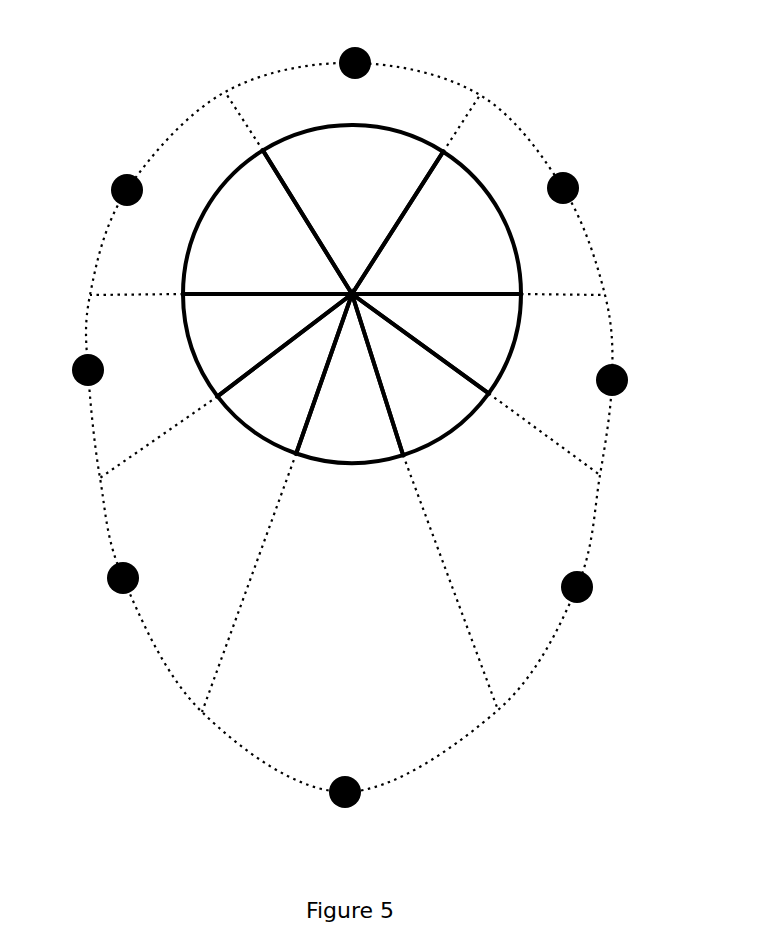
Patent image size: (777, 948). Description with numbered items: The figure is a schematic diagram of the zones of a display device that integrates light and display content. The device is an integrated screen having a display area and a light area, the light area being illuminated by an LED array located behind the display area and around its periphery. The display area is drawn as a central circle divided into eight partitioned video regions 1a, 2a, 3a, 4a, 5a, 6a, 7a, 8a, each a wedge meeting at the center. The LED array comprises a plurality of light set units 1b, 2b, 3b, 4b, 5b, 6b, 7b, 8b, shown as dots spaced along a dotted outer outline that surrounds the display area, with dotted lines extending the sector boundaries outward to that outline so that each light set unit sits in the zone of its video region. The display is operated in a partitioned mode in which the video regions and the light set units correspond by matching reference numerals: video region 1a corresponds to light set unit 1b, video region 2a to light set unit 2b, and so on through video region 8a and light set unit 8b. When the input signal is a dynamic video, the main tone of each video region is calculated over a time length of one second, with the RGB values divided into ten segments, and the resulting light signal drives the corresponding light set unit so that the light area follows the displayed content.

The video region 1a is at (353, 209).
The video region 2a is at (436, 223).
The video region 3a is at (436, 343).
The video region 4a is at (420, 374).
The video region 5a is at (349, 378).
The video region 6a is at (285, 374).
The video region 7a is at (267, 345).
The video region 8a is at (267, 222).
The light set unit 1b is at (358, 46).
The light set unit 2b is at (587, 186).
The light set unit 3b is at (635, 380).
The light set unit 4b is at (599, 593).
The light set unit 5b is at (345, 814).
The light set unit 6b is at (101, 585).
The light set unit 7b is at (67, 370).
The light set unit 8b is at (104, 185).